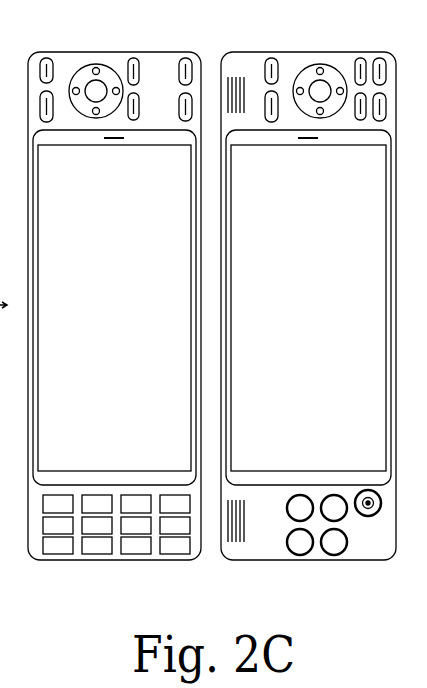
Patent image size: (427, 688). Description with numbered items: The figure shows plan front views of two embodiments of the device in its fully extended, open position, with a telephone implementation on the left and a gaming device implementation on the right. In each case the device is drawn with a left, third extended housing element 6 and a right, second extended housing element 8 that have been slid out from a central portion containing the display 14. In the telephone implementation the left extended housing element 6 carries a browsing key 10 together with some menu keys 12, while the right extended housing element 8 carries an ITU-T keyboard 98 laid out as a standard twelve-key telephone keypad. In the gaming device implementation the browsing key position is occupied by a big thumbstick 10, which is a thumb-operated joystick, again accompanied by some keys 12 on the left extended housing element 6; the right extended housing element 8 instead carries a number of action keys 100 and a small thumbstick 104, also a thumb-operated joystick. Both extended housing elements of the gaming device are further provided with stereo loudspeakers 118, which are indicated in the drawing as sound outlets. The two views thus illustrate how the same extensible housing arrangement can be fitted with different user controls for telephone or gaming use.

The third housing element 6 is at (346, 58).
The second housing element 8 is at (35, 538).
The browsing key 10 is at (92, 86).
The menu keys 12 is at (183, 60).
The display 14 is at (212, 308).
The ITU-T keyboard 98 is at (108, 527).
The action keys 100 is at (330, 554).
The small thumbstick 104 is at (368, 517).
The stereo loudspeakers 118 is at (236, 75).